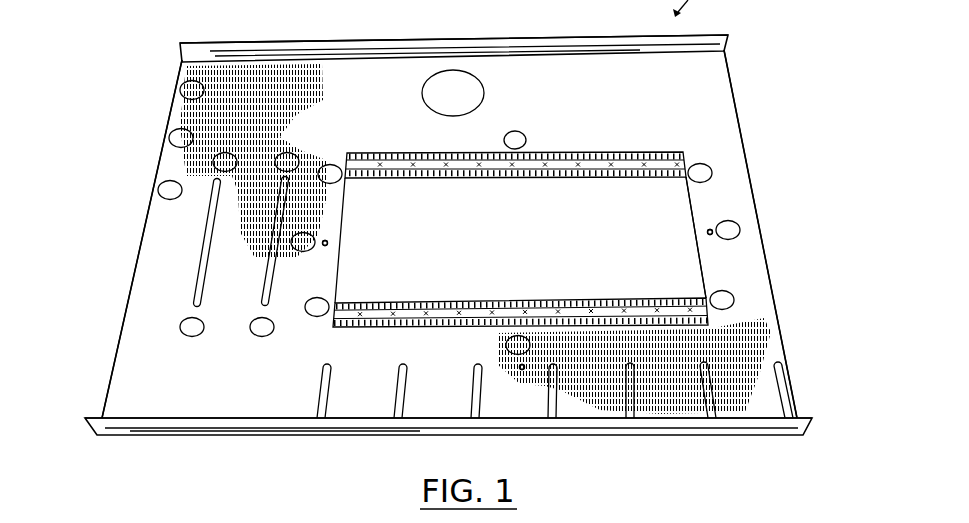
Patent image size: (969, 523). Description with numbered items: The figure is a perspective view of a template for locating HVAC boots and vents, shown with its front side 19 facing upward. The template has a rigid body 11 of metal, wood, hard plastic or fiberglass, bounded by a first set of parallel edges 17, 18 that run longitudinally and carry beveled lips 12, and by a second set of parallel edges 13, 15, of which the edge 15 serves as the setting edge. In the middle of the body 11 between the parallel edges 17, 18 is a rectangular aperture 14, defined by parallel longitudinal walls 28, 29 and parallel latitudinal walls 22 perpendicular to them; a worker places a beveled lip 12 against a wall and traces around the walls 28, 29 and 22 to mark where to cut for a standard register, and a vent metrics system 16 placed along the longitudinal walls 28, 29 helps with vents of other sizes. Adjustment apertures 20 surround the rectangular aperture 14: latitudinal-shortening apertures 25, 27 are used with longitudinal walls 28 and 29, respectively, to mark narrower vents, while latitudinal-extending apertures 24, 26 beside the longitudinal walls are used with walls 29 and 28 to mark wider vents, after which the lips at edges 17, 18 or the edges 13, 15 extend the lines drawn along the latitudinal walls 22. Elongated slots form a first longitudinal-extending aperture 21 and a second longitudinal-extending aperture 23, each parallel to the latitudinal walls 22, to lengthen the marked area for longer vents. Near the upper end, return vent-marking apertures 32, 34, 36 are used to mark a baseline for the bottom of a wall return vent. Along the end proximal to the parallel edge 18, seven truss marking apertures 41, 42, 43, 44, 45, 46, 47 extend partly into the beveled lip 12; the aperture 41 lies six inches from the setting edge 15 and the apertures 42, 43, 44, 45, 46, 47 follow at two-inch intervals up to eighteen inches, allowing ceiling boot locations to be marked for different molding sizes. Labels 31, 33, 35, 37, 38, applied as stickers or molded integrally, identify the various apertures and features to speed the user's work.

The body 11 is at (735, 68).
The beveled lips 12 is at (735, 46).
The second parallel edge 13 is at (783, 318).
The rectangular aperture 14 is at (705, 213).
The setting edge 15 is at (100, 393).
The vent metrics system 16 is at (522, 217).
The parallel edge 17 is at (447, 42).
The parallel edge 18 is at (222, 418).
The front side 19 is at (697, 72).
The adjustment apertures 20 is at (514, 126).
The first longitudinal-extending aperture 21 is at (266, 290).
The latitudinal walls 22 is at (340, 266).
The second longitudinal-extending aperture 23 is at (198, 290).
The latitudinal-extending aperture 24 is at (519, 129).
The latitudinal-shortening aperture 25 is at (327, 241).
The latitudinal-extending aperture 26 is at (505, 344).
The latitudinal-shortening aperture 27 is at (707, 232).
The longitudinal wall 28 is at (508, 178).
The longitudinal wall 29 is at (480, 302).
The label 31 is at (258, 338).
The return vent-marking aperture 32 is at (188, 192).
The label 33 is at (192, 338).
The return vent-marking aperture 34 is at (200, 140).
The label 35 is at (740, 226).
The return vent-marking aperture 36 is at (207, 92).
The label 37 is at (508, 138).
The label 38 is at (158, 180).
The truss marking aperture 41 is at (328, 398).
The truss marking aperture 42 is at (405, 398).
The truss marking aperture 43 is at (480, 398).
The truss marking aperture 44 is at (557, 398).
The truss marking aperture 45 is at (635, 398).
The truss marking aperture 46 is at (708, 398).
The truss marking aperture 47 is at (784, 375).